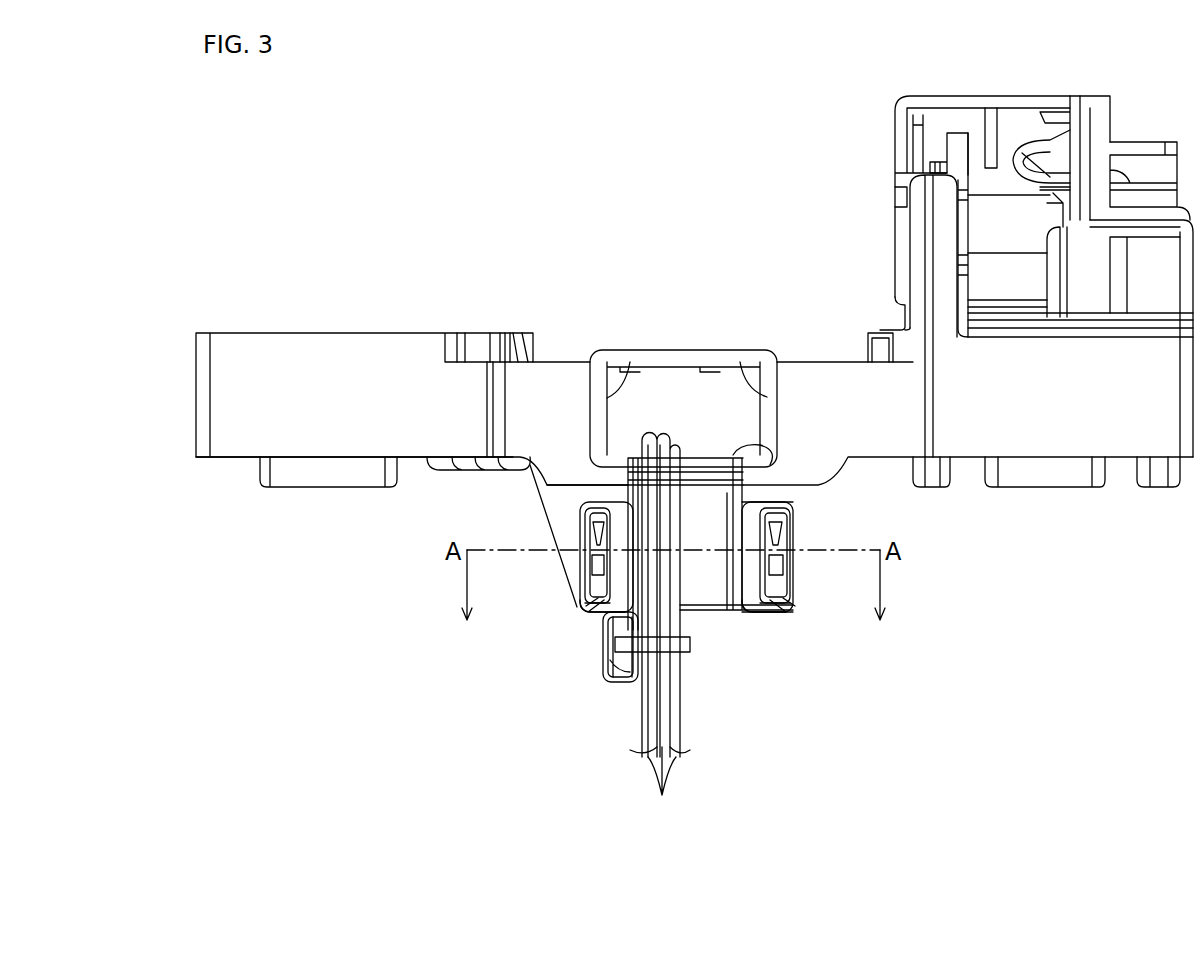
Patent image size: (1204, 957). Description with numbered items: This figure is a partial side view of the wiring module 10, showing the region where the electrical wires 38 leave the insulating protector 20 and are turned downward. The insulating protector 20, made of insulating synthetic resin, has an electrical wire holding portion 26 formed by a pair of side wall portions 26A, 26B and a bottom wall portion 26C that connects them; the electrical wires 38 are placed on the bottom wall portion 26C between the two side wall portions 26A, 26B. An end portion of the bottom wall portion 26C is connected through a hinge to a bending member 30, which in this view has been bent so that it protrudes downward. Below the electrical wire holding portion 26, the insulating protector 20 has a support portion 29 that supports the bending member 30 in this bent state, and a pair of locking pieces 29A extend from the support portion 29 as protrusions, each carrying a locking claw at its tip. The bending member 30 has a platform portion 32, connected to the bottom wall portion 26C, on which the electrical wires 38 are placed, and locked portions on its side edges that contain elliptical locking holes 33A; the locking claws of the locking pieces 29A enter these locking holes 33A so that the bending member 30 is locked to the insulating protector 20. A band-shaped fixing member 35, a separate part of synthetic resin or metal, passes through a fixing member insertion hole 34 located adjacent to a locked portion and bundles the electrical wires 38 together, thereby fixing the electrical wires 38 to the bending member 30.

The wiring module 10 is at (423, 205).
The insulating protector 20 is at (300, 333).
The electrical wire holding portion 26 is at (790, 455).
The side wall portion 26A is at (742, 388).
The side wall portion 26B is at (612, 390).
The bottom wall portion 26C is at (767, 450).
The support portion 29 is at (558, 512).
The locking piece 29A is at (580, 562).
The bending member 30 is at (762, 615).
The platform portion 32 is at (713, 583).
The locking hole 33A is at (600, 615).
The fixing member insertion hole 34 is at (633, 682).
The fixing member 35 is at (690, 648).
The electrical wire 38 is at (662, 795).